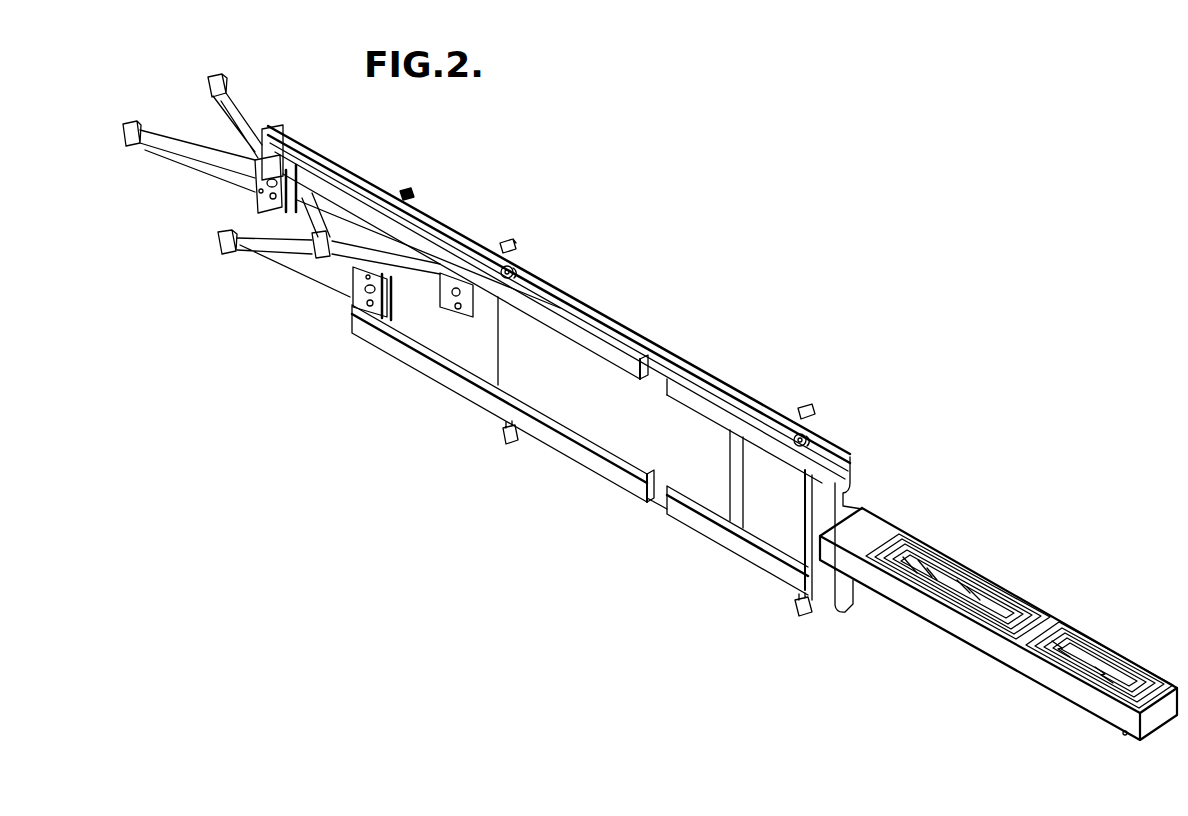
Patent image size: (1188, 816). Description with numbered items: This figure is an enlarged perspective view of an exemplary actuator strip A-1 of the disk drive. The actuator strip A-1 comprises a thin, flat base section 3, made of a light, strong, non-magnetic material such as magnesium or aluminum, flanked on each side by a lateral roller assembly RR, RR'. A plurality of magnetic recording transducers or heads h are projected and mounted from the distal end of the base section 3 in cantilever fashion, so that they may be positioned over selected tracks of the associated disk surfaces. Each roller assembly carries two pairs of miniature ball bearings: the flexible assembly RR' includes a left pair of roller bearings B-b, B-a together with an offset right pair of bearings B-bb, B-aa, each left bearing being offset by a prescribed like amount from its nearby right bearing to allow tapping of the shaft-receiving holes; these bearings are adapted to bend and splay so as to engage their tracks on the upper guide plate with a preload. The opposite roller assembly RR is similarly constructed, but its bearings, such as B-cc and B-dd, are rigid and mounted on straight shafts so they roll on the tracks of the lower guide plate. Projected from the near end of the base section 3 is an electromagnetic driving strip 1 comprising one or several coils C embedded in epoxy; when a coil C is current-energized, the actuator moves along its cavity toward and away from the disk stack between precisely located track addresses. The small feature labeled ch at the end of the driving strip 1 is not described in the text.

The electromagnetic driving strip 1 is at (1027, 597).
The flat base section 3 is at (628, 423).
The actuator strip A-1 is at (754, 316).
The lateral roller assembly RR is at (550, 450).
The lateral roller assembly RR' is at (556, 298).
The roller bearing B-a is at (806, 405).
The roller bearing B-aa is at (810, 440).
The roller bearing B-b is at (504, 243).
The roller bearing B-bb is at (526, 268).
The roller bearing B-cc is at (497, 432).
The roller bearing B-dd is at (793, 607).
The coil C is at (966, 560).
The hole ch is at (1120, 736).
The magnetic recording transducer h is at (224, 76).